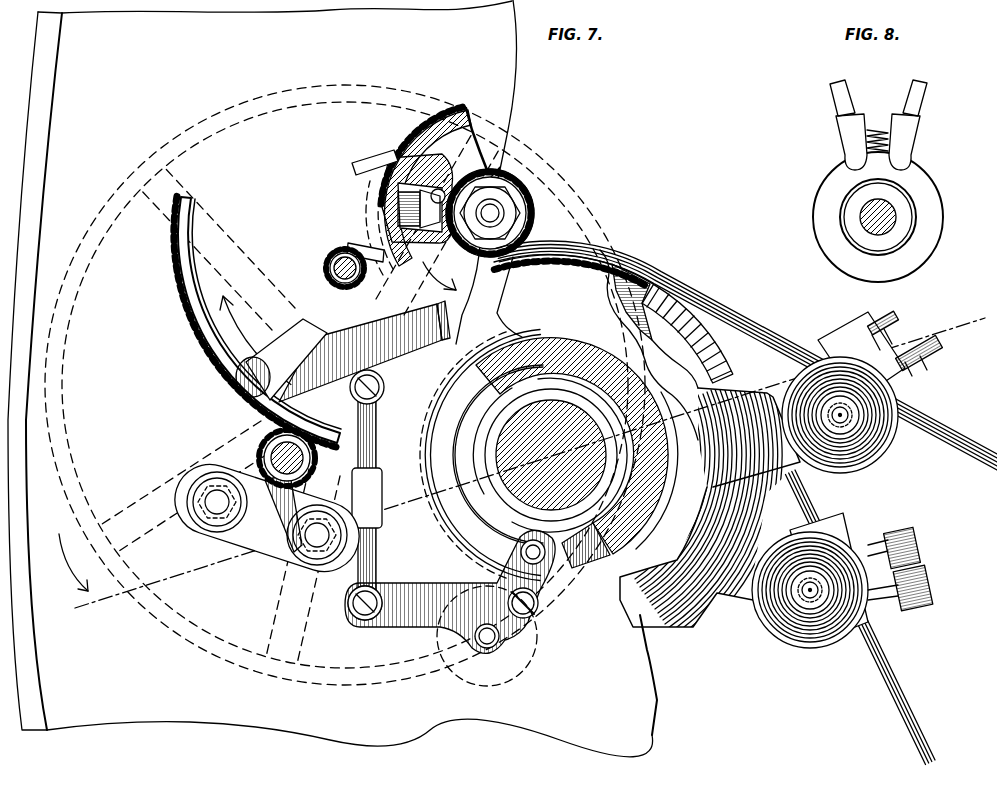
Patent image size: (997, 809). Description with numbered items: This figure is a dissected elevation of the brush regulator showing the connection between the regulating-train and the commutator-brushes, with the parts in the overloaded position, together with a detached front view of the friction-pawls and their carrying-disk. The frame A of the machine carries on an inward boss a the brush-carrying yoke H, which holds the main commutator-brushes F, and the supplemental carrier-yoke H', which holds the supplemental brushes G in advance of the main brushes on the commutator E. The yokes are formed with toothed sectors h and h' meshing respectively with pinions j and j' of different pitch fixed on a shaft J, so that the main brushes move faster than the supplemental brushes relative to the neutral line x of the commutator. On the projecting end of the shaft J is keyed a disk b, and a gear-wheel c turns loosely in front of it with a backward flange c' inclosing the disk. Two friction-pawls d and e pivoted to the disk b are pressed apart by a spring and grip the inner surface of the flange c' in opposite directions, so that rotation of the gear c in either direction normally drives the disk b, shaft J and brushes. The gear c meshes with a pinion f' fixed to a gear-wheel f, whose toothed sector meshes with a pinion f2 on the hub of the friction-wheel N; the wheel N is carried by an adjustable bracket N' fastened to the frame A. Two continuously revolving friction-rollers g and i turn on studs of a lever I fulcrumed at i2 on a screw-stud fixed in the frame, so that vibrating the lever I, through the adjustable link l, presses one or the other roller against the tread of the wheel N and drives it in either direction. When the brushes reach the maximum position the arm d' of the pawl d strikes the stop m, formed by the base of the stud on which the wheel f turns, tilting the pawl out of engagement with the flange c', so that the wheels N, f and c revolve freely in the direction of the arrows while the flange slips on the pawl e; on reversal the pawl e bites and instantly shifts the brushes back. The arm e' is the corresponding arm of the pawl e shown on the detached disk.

In FIG. 7, the frame A is at (332, 378).
In FIG. 7, the friction-wheel N is at (345, 385).
In FIG. 7, the bracket N' is at (267, 517).
In FIG. 7, the neutral line x is at (522, 468).
In FIG. 7, the gear-wheel f is at (257, 321).
In FIG. 7, the pinion f' is at (345, 278).
In FIG. 7, the pinion f2 is at (312, 460).
In FIG. 7, the gear-wheel c is at (434, 198).
In FIG. 7, the flange c' is at (366, 228).
In FIG. 7, the disk b is at (443, 196).
In FIG. 8, the disk b is at (878, 217).
In FIG. 7, the friction-pawl d is at (404, 219).
In FIG. 8, the friction-pawl d is at (856, 142).
In FIG. 7, the friction-pawl e is at (418, 202).
In FIG. 8, the friction-pawl e is at (909, 142).
In FIG. 7, the arm d' is at (358, 240).
In FIG. 8, the arm d' is at (842, 89).
In FIG. 7, the pawl arm extension e' is at (368, 162).
In FIG. 8, the pawl arm extension e' is at (916, 89).
In FIG. 7, the shaft J is at (500, 213).
In FIG. 7, the pinion j is at (500, 213).
In FIG. 7, the pinion j' is at (501, 206).
In FIG. 7, the stop m is at (333, 258).
In FIG. 7, the shaft k is at (551, 455).
In FIG. 7, the boss a is at (640, 382).
In FIG. 7, the commutator E is at (725, 350).
In FIG. 7, the toothed sector h is at (649, 345).
In FIG. 7, the toothed sector h' is at (573, 270).
In FIG. 7, the link l is at (386, 474).
In FIG. 7, the lever I is at (450, 591).
In FIG. 7, the friction-roller g is at (548, 565).
In FIG. 7, the friction-roller i is at (527, 650).
In FIG. 7, the fulcrum i2 is at (539, 603).
In FIG. 7, the supplemental commutator-brush G is at (746, 355).
In FIG. 7, the main commutator-brush F is at (910, 672).
In FIG. 7, the brush-carrying yoke H is at (842, 590).
In FIG. 7, the supplemental carrier-yoke H' is at (862, 394).